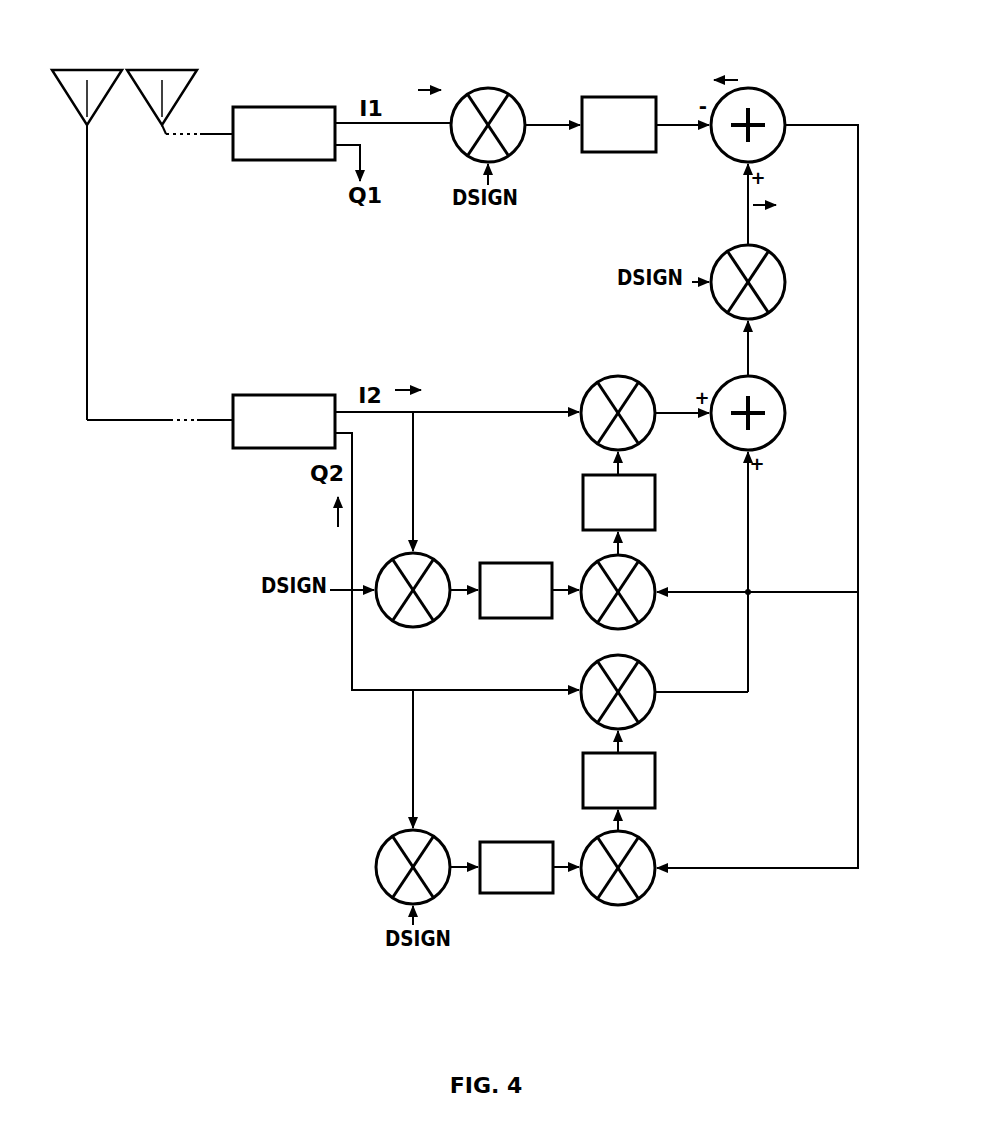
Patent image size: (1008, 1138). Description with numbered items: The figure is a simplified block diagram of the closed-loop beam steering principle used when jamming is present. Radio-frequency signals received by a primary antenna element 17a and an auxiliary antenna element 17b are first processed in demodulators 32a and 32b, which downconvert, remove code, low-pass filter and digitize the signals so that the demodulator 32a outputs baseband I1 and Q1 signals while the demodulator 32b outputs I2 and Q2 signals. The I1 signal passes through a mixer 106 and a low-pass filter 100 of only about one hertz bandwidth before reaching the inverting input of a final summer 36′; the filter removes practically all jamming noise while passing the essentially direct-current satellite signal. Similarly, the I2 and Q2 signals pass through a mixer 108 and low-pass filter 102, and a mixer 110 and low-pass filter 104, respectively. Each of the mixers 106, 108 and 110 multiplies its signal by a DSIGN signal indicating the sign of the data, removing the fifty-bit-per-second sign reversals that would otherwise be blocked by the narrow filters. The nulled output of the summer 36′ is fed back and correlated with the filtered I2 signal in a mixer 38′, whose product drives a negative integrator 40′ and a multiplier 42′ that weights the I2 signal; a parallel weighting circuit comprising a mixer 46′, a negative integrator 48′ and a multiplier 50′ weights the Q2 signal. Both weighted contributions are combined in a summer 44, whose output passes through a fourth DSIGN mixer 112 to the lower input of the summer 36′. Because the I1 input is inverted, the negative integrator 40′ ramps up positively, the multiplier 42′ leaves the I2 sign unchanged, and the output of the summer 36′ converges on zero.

The primary antenna element 17a is at (168, 70).
The auxiliary antenna element 17b is at (92, 70).
The demodulator 32a is at (284, 104).
The demodulator 32b is at (284, 393).
The mixer 106 is at (488, 95).
The low-pass filter 100 is at (619, 96).
The summer 36′ is at (748, 96).
The mixer 112 is at (780, 282).
The multiplier 42′ is at (618, 385).
The summer 44 is at (773, 413).
The negative integrator 40′ is at (649, 502).
The mixer 38′ is at (640, 600).
The mixer 108 is at (418, 619).
The low-pass filter 102 is at (516, 563).
The multiplier 50′ is at (640, 699).
The negative integrator 48′ is at (649, 780).
The mixer 46′ is at (618, 898).
The mixer 110 is at (381, 867).
The low-pass filter 104 is at (516, 897).